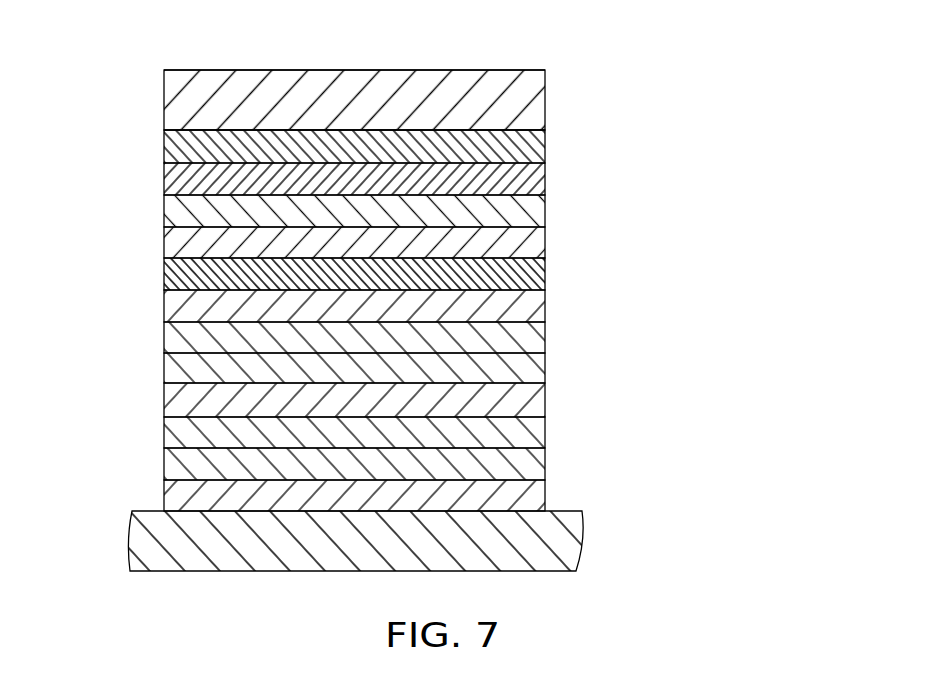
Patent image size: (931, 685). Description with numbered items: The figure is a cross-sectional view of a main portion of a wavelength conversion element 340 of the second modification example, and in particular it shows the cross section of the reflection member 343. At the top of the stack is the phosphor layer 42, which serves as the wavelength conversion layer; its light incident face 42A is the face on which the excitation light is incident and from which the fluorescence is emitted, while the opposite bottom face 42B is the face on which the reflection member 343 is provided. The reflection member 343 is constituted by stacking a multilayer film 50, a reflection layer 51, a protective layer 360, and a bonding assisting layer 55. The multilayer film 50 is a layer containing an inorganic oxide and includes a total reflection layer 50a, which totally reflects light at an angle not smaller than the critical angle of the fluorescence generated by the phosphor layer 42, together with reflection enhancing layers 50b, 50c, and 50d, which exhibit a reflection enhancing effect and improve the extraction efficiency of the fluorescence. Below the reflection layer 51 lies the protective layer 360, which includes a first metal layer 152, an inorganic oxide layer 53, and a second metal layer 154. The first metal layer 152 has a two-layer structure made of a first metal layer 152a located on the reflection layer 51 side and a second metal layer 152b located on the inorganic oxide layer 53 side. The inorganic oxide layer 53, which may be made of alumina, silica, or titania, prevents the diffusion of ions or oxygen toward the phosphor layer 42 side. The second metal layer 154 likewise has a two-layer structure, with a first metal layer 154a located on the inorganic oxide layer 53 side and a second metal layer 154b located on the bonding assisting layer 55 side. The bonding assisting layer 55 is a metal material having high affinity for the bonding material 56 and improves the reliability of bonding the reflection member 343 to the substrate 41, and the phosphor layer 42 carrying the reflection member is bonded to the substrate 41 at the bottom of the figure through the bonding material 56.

The wavelength conversion element 340 is at (542, 45).
The phosphor layer 42 is at (528, 102).
The light incident face 42A is at (178, 70).
The bottom face 42B is at (176, 136).
The multilayer film 50 is at (682, 133).
The total reflection layer 50a is at (530, 146).
The reflection enhancing layer 50b is at (530, 177).
The reflection enhancing layer 50c is at (530, 209).
The reflection enhancing layer 50d is at (530, 241).
The reflection layer 51 is at (530, 273).
The reflection member 343 is at (740, 183).
The protective layer 360 is at (682, 290).
The first metal layer 152 is at (625, 292).
The first metal layer 152a is at (530, 302).
The second metal layer 152b is at (530, 334).
The inorganic oxide layer 53 is at (530, 366).
The second metal layer 154 is at (619, 388).
The first metal layer 154a is at (530, 399).
The second metal layer 154b is at (530, 431).
The bonding assisting layer 55 is at (530, 462).
The bonding material 56 is at (530, 494).
The substrate 41 is at (566, 538).